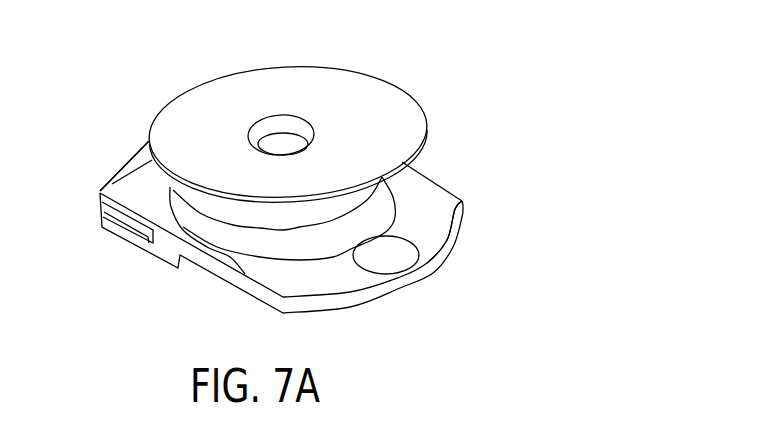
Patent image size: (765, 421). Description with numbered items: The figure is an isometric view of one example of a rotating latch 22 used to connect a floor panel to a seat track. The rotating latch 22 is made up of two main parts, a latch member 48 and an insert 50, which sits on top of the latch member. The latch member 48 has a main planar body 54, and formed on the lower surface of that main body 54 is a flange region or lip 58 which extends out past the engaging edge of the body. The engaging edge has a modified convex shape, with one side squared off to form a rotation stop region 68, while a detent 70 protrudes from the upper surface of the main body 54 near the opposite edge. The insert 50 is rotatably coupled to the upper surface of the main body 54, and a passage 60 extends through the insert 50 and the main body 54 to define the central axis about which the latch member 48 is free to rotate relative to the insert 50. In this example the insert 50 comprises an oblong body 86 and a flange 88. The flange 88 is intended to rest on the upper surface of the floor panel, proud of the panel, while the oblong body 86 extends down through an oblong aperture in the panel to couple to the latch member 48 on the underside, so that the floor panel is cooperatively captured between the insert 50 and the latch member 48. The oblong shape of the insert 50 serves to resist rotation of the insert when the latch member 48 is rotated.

The rotating latch 22 is at (92, 127).
The latch member 48 is at (447, 268).
The insert 50 is at (398, 80).
The main planar body 54 is at (462, 202).
The lip 58 is at (115, 230).
The passage 60 is at (287, 136).
The rotation stop region 68 is at (100, 192).
The detent 70 is at (394, 264).
The oblong body 86 is at (217, 208).
The flange 88 is at (400, 128).